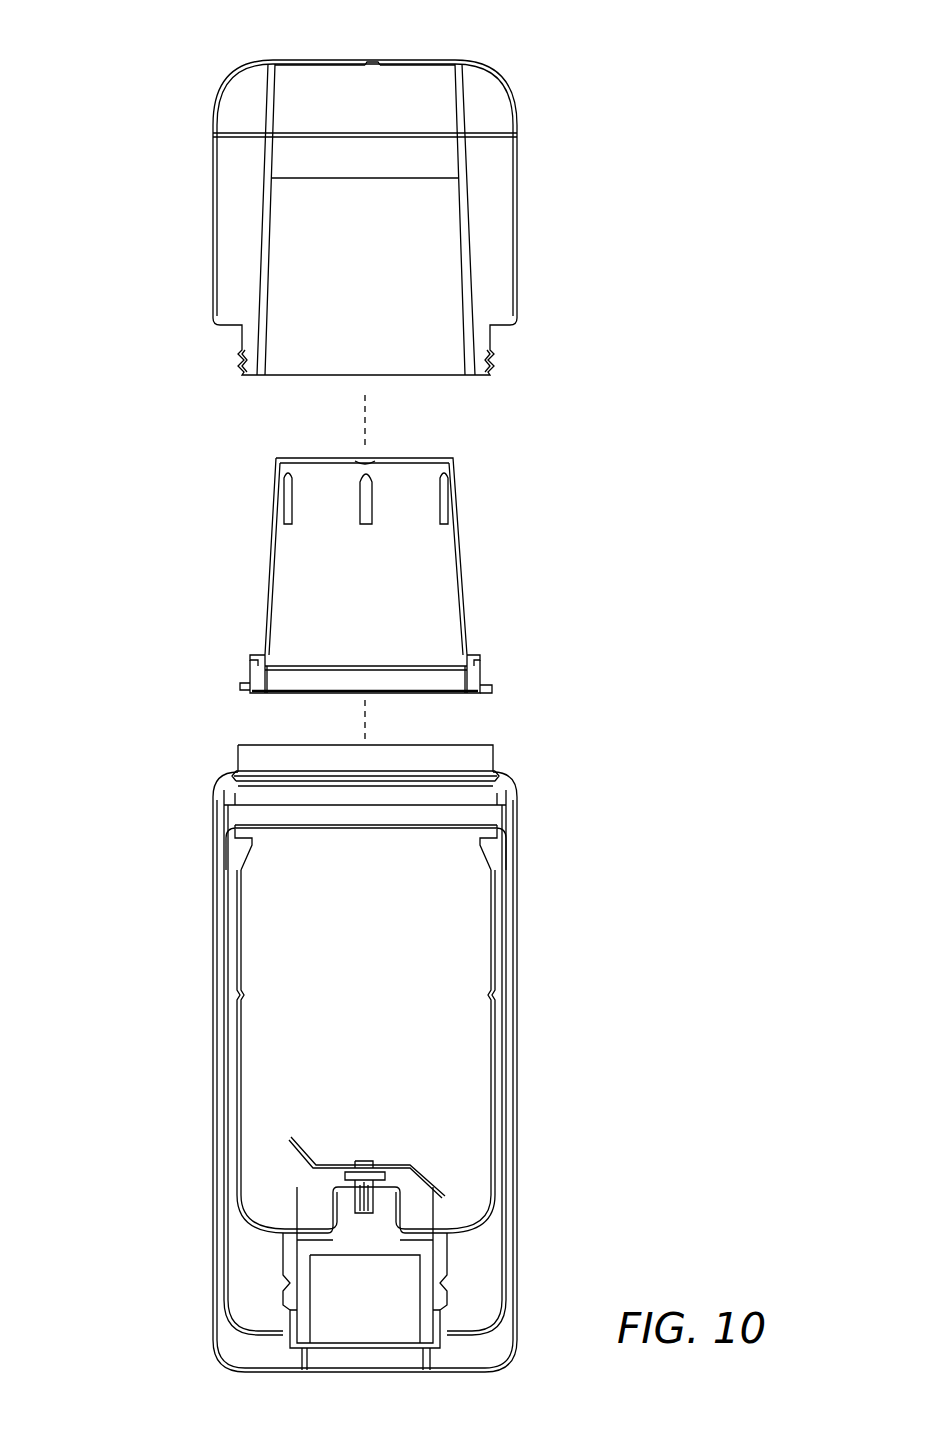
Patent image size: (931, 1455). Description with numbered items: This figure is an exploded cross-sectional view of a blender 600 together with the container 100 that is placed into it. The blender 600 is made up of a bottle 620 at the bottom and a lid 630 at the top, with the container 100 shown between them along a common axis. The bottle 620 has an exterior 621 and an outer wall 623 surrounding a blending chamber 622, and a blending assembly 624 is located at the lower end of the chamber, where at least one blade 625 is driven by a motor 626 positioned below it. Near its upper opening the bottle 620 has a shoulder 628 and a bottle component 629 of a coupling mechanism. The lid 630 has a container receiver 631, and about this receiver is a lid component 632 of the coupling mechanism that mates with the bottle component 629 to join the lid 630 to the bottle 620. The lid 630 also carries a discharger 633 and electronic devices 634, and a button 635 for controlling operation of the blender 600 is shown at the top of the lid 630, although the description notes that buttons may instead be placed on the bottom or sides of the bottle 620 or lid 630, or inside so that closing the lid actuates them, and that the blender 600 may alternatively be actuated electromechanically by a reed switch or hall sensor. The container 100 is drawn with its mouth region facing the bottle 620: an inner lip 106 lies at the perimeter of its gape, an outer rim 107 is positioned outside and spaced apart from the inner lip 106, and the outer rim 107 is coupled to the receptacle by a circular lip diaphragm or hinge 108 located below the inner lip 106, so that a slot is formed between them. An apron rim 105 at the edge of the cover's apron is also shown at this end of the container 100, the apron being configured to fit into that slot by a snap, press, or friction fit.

The blender 600 is at (518, 50).
The lid 630 is at (520, 232).
The button 635 is at (365, 62).
The electronic devices 634 is at (400, 97).
The discharger 633 is at (400, 155).
The container receiver 631 is at (460, 203).
The lid component of the coupling mechanism 632 is at (490, 352).
The container 100 is at (490, 518).
The circular lip diaphragm or hinge 108 is at (258, 660).
The inner lip 106 is at (257, 680).
The outer rim 107 is at (245, 688).
The apron rim 105 is at (248, 694).
The bottle 620 is at (520, 1030).
The exterior 621 is at (518, 890).
The bottle component of the coupling mechanism 629 is at (495, 773).
The outer wall 623 is at (507, 1155).
The shoulder 628 is at (483, 855).
The blending chamber 622 is at (493, 948).
The blending assembly 624 is at (397, 1150).
The blade 625 is at (305, 1155).
The motor 626 is at (387, 1281).